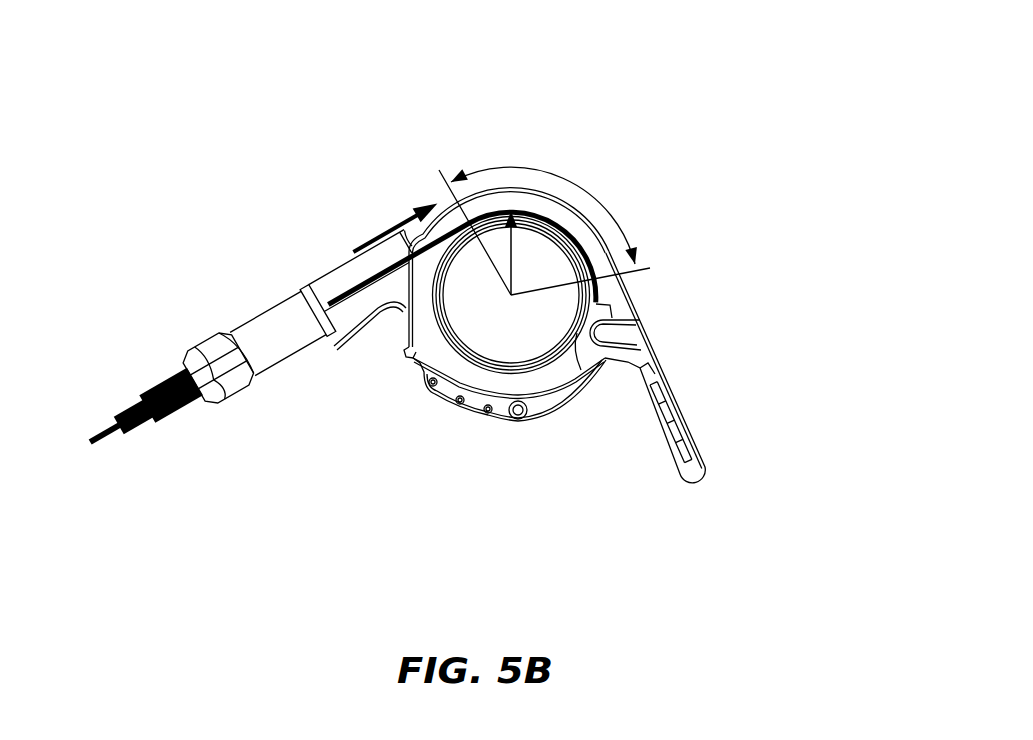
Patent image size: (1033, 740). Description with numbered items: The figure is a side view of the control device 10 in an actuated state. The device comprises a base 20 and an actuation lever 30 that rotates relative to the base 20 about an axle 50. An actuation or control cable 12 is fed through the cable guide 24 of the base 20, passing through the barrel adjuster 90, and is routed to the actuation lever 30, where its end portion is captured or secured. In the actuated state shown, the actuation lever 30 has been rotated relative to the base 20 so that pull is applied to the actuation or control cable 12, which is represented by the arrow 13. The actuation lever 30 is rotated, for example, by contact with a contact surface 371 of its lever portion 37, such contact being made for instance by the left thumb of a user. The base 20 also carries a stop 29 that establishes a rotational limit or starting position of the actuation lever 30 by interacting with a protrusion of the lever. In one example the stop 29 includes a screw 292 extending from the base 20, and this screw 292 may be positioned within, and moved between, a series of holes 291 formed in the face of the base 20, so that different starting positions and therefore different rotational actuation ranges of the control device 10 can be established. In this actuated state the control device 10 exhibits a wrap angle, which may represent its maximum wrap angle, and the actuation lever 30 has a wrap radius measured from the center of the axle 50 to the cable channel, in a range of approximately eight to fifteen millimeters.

The control device 10 is at (207, 56).
The base 20 is at (346, 179).
The actuation or control cable 12 is at (355, 287).
The arrow 13 is at (375, 236).
The cable guide 24 is at (260, 313).
The barrel adjuster 90 is at (174, 320).
The actuation lever 30 is at (676, 181).
The lever portion 37 is at (704, 307).
The contact surface 371 is at (692, 427).
The axle 50 is at (463, 341).
The stop 29 is at (408, 354).
The holes 291 is at (485, 412).
The screw 292 is at (523, 419).